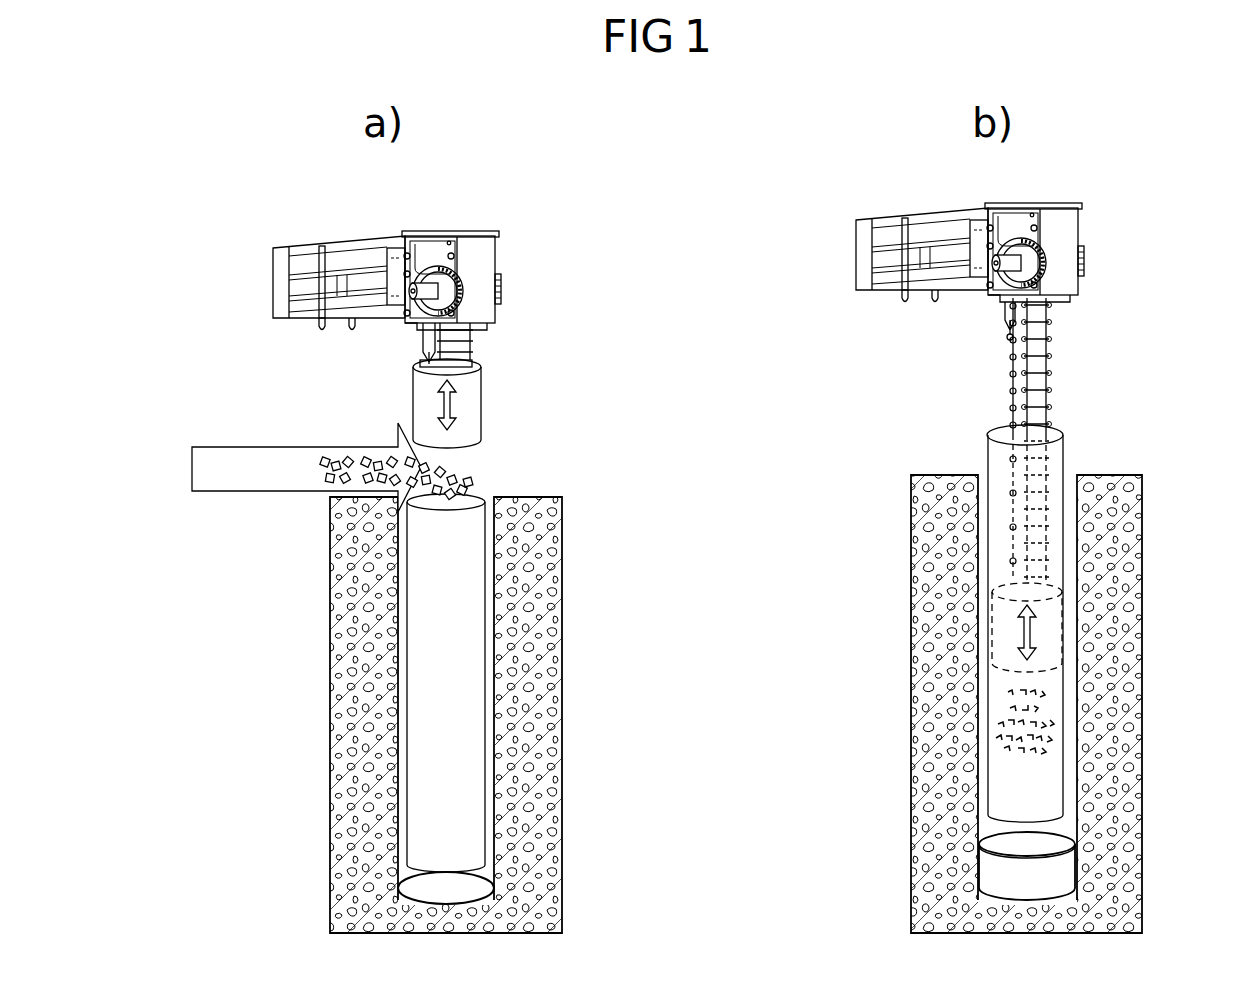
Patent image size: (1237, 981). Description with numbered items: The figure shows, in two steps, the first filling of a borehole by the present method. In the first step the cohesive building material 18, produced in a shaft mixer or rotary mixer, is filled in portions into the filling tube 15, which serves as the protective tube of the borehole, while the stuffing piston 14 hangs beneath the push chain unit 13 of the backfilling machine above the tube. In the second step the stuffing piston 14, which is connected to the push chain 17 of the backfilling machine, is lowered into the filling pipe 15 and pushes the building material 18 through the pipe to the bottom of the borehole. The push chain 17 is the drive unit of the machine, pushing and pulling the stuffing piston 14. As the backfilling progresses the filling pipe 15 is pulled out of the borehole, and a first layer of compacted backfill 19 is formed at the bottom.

The push chain unit 13 is at (311, 248).
The stuffing piston 14 is at (477, 402).
The filling tube 15 is at (474, 577).
The push chain 17 is at (1048, 352).
The cohesive building material 18 is at (420, 468).
The compacted backfill 19 is at (1064, 871).